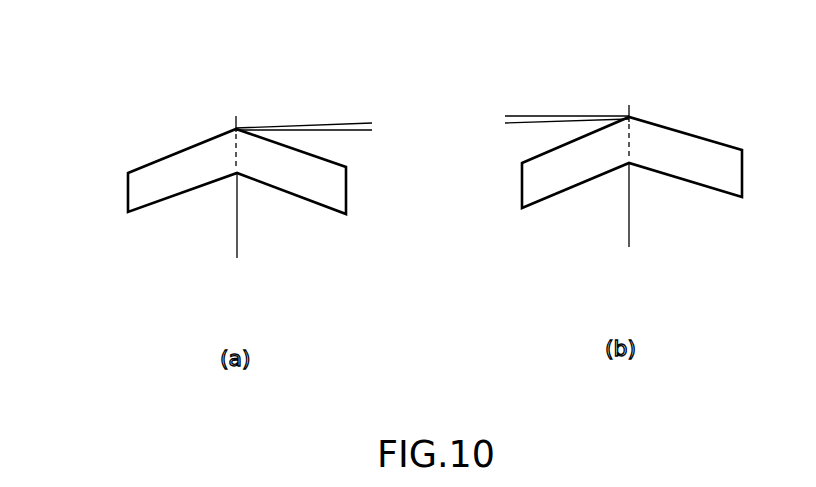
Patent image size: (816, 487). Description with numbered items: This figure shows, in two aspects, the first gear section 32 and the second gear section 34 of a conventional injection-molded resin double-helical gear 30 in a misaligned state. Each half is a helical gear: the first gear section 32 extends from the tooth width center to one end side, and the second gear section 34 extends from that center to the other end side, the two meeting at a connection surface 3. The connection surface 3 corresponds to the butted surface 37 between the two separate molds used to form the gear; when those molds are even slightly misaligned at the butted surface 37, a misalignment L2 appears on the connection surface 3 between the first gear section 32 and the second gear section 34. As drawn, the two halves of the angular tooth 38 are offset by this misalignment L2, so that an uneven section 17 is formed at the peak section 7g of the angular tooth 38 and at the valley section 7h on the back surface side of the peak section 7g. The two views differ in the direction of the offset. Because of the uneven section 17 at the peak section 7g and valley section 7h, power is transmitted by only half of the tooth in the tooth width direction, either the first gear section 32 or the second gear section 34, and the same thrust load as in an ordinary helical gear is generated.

The connection surface 3 is at (238, 223).
The resin double-helical gear 30 is at (117, 125).
The first gear section 32 is at (155, 170).
The second gear section 34 is at (313, 156).
The peak section 7g is at (236, 128).
The valley section 7h is at (238, 174).
The uneven section 17 is at (236, 130).
The butted surface 37 is at (240, 164).
The angular tooth 38 is at (135, 200).
The misalignment L2 is at (372, 106).